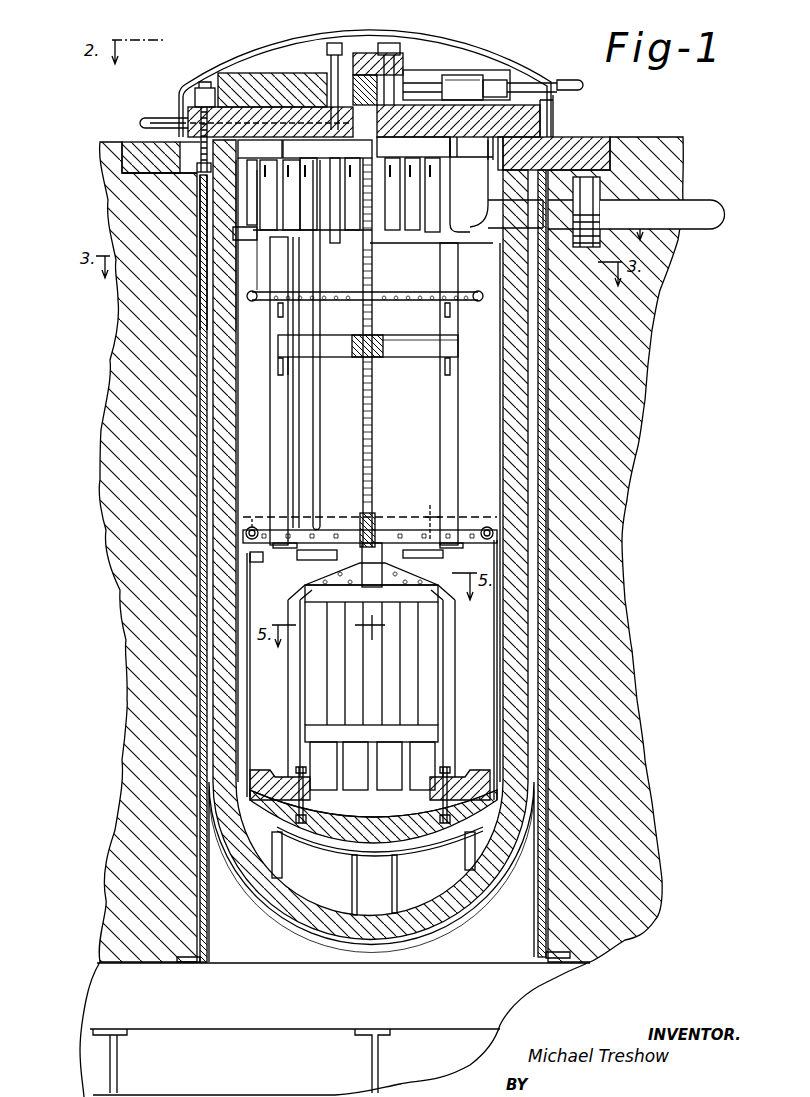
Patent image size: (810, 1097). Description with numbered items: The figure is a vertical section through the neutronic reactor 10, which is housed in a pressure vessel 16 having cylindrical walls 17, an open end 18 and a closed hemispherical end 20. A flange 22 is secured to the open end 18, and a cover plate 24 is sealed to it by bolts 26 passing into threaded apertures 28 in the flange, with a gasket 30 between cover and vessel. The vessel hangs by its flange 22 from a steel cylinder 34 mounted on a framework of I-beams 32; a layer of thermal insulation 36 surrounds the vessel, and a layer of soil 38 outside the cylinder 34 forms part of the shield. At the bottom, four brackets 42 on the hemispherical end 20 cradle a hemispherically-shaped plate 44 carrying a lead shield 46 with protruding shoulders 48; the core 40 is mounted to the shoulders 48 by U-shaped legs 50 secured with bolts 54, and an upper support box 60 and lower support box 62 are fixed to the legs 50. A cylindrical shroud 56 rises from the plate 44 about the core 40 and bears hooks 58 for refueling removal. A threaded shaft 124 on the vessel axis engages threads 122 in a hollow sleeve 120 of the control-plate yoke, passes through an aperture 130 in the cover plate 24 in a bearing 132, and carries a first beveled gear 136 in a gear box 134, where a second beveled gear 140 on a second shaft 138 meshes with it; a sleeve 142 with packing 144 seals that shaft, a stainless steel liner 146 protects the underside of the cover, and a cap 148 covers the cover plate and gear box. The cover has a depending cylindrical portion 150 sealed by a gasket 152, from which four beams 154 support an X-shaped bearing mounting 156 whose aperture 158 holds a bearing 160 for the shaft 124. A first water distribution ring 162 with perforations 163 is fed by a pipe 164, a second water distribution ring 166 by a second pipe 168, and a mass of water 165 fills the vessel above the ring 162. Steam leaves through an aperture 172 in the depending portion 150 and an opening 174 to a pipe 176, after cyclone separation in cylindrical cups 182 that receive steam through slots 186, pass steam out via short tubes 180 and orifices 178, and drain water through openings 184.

The neutronic reactor 10 is at (570, 396).
The pressure vessel 16 is at (558, 612).
The cylindrical walls 17 is at (505, 357).
The open end 18 is at (540, 160).
The closed hemispherical end 20 is at (388, 920).
The flange 22 is at (185, 158).
The cover plate 24 is at (300, 92).
The bolts 26 is at (195, 97).
The threaded apertures 28 is at (198, 176).
The gasket 30 is at (541, 130).
The I-beams 32 is at (308, 1020).
The cylinder 34 is at (538, 556).
The layer of thermal insulation 36 is at (520, 325).
The layer of soil 38 is at (118, 492).
The core 40 is at (384, 674).
The brackets 42 is at (283, 868).
The hemispherically-shaped plate 44 is at (400, 854).
The shield 46 is at (398, 840).
The shoulders 48 is at (432, 798).
The legs 50 is at (445, 700).
The bolts 54 is at (296, 792).
The cylindrical shroud 56 is at (498, 658).
The hooks 58 is at (297, 558).
The upper support box 60 is at (418, 590).
The lower support box 62 is at (428, 737).
The cylindrical hollow sleeve 120 is at (438, 140).
The threads 122 is at (360, 512).
The threaded shaft 124 is at (363, 411).
The aperture 130 is at (382, 126).
The bearing 132 is at (413, 147).
The gear box 134 is at (357, 53).
The first beveled gear 136 is at (386, 43).
The second shaft 138 is at (470, 69).
The second beveled gear 140 is at (433, 72).
The sleeve 142 is at (496, 80).
The packing 144 is at (530, 83).
The stainless steel liner 146 is at (452, 148).
The cap 148 is at (226, 68).
The depending cylindrical portion 150 is at (205, 230).
The gasket 152 is at (212, 246).
The beams 154 is at (278, 448).
The X-shaped bearing mounting 156 is at (420, 352).
The aperture 158 is at (376, 336).
The bearing 160 is at (358, 360).
The first water distribution ring 162 is at (480, 526).
The perforations 163 is at (254, 527).
The pipe 164 is at (328, 80).
The mass of water 165 is at (430, 512).
The second water distribution ring 166 is at (352, 280).
The second pipe 168 is at (255, 268).
The aperture 172 is at (496, 186).
The opening 174 is at (583, 212).
The pipe 176 is at (566, 246).
The orifices 178 is at (260, 150).
The short tubes 180 is at (236, 214).
The cylindrical cup 182 is at (384, 232).
The opening 184 is at (240, 240).
The slot 186 is at (327, 150).